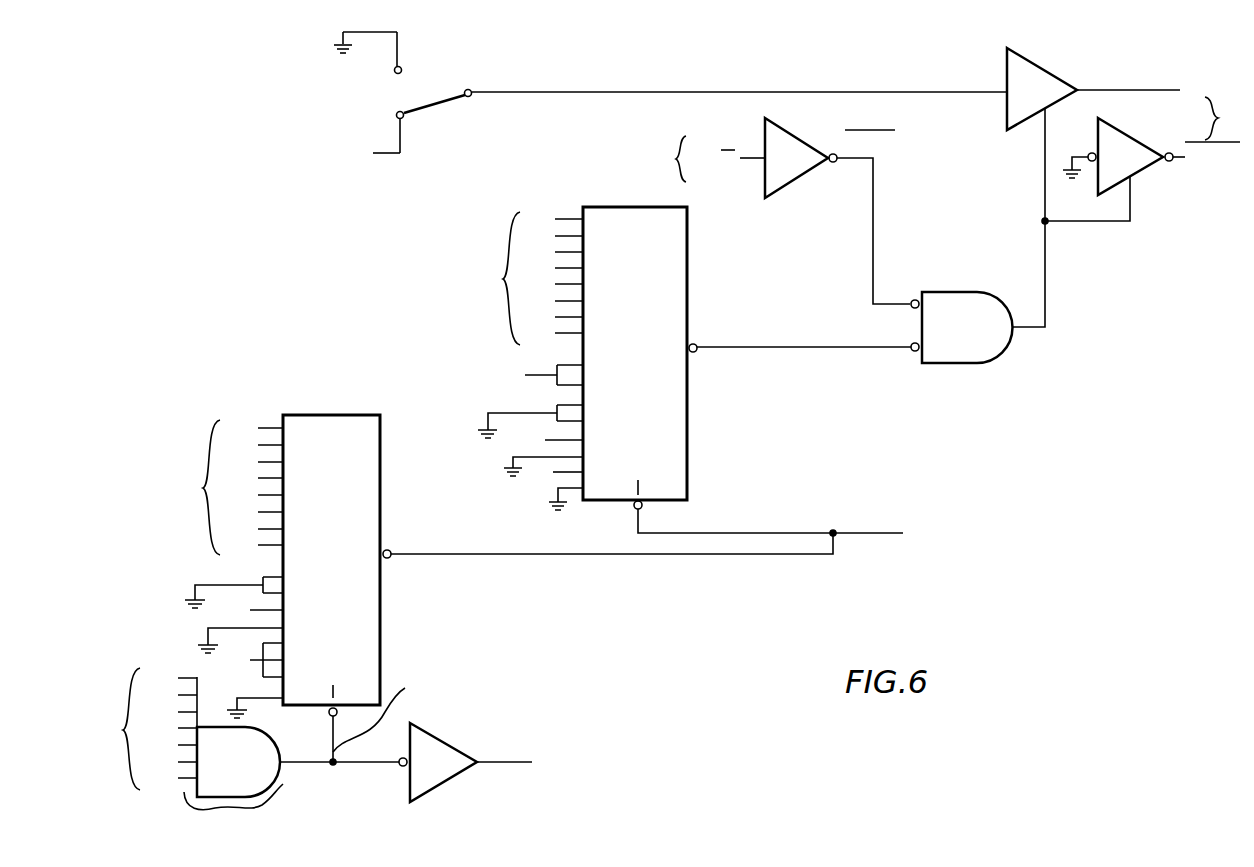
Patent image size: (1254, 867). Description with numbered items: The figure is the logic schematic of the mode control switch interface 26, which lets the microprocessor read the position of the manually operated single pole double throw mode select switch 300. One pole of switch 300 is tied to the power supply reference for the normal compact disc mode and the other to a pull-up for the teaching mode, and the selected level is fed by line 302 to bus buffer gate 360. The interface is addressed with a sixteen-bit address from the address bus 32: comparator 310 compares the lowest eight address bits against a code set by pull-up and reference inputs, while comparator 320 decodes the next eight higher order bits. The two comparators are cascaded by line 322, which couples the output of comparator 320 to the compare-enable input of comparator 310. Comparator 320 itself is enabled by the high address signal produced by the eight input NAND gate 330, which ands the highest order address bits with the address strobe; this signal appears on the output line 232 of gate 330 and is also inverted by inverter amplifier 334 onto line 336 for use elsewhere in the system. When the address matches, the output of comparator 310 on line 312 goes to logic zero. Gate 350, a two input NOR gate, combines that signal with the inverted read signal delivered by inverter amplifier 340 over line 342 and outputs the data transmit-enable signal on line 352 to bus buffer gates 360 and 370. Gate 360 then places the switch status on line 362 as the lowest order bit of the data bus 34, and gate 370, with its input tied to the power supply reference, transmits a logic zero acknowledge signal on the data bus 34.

The mode control switch interface 26 is at (383, 348).
The address bus 32 is at (430, 463).
The microprocessor data bus 34 is at (1224, 118).
The address strobe line 232 is at (293, 762).
The mode select switch 300 is at (433, 105).
The line 302 is at (653, 91).
The comparator 310 is at (687, 284).
The line 312 is at (790, 349).
The comparator 320 is at (380, 527).
The line 322 is at (792, 533).
The NAND gate 330 is at (240, 772).
The inverter amplifier 334 is at (448, 770).
The line 336 is at (515, 762).
The inverter amplifier 340 is at (803, 169).
The line 342 is at (875, 245).
The gate 350 is at (975, 337).
The line 352 is at (1047, 318).
The bus buffer gate 360 is at (1050, 92).
The line 362 is at (1093, 90).
The bus buffer gate 370 is at (1138, 166).